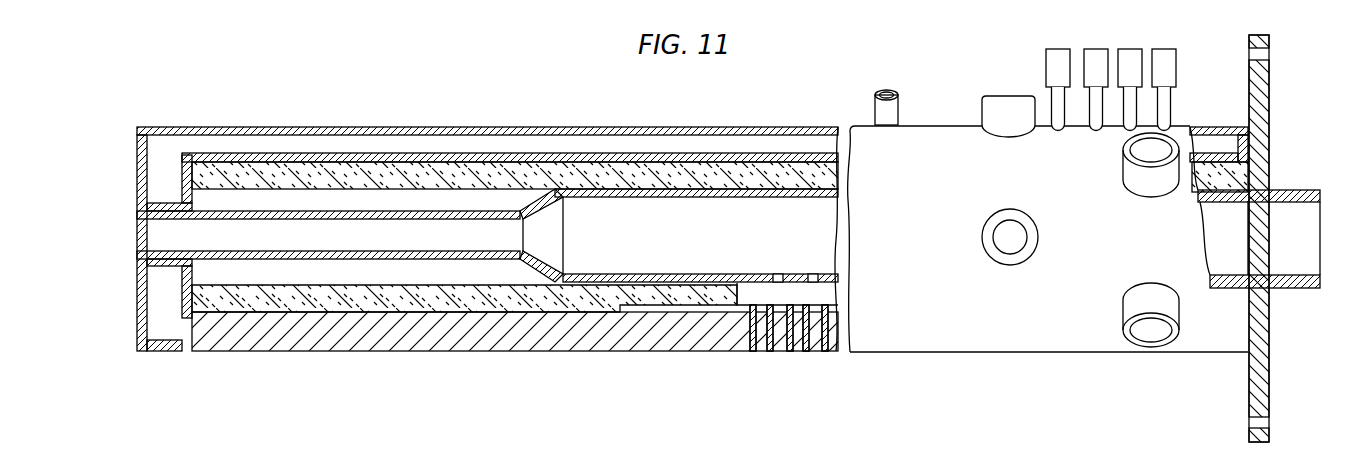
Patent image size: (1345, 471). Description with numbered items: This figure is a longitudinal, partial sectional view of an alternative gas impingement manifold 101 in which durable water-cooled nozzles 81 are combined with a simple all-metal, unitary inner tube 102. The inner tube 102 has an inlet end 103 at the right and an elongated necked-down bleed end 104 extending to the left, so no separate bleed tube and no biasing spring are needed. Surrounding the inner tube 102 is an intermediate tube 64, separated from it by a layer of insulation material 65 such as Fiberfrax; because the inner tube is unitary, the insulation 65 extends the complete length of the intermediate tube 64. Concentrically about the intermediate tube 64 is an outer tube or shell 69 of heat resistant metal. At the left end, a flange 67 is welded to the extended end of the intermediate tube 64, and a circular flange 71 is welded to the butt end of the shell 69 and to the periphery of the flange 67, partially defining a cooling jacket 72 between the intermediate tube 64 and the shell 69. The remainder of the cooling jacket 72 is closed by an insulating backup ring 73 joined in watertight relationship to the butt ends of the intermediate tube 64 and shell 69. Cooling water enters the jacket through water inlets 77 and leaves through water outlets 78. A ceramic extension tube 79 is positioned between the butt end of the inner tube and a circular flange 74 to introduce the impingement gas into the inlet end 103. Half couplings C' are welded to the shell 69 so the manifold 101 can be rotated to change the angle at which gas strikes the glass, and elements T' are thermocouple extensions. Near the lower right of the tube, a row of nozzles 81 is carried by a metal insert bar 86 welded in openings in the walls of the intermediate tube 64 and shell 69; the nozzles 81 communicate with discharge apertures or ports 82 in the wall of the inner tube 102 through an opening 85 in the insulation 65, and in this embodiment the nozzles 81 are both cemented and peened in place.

The gas manifold 101 is at (477, 118).
The outer tube or shell 69 is at (268, 127).
The circular flange 71 is at (137, 165).
The flange 67 is at (180, 170).
The cooling jacket 72 is at (347, 140).
The intermediate tube 64 is at (682, 157).
The insulation material 65 is at (750, 170).
The necked-down bleed end 104 is at (365, 251).
The unitary inner tube 102 is at (653, 200).
The metal insert bar 86 is at (507, 333).
The opening in the insulation 85 is at (752, 292).
The discharge apertures or ports 82 is at (813, 275).
The nozzles 81 is at (802, 342).
The half couplings C' is at (1010, 165).
The thermocouple extensions T' is at (1111, 72).
The water outlets 78 is at (1132, 172).
The water inlets 77 is at (1132, 305).
The insulating backup ring 73 is at (1223, 127).
The circular flange 74 is at (1262, 108).
The ceramic extension tube 79 is at (1298, 193).
The inlet end 103 is at (1230, 273).